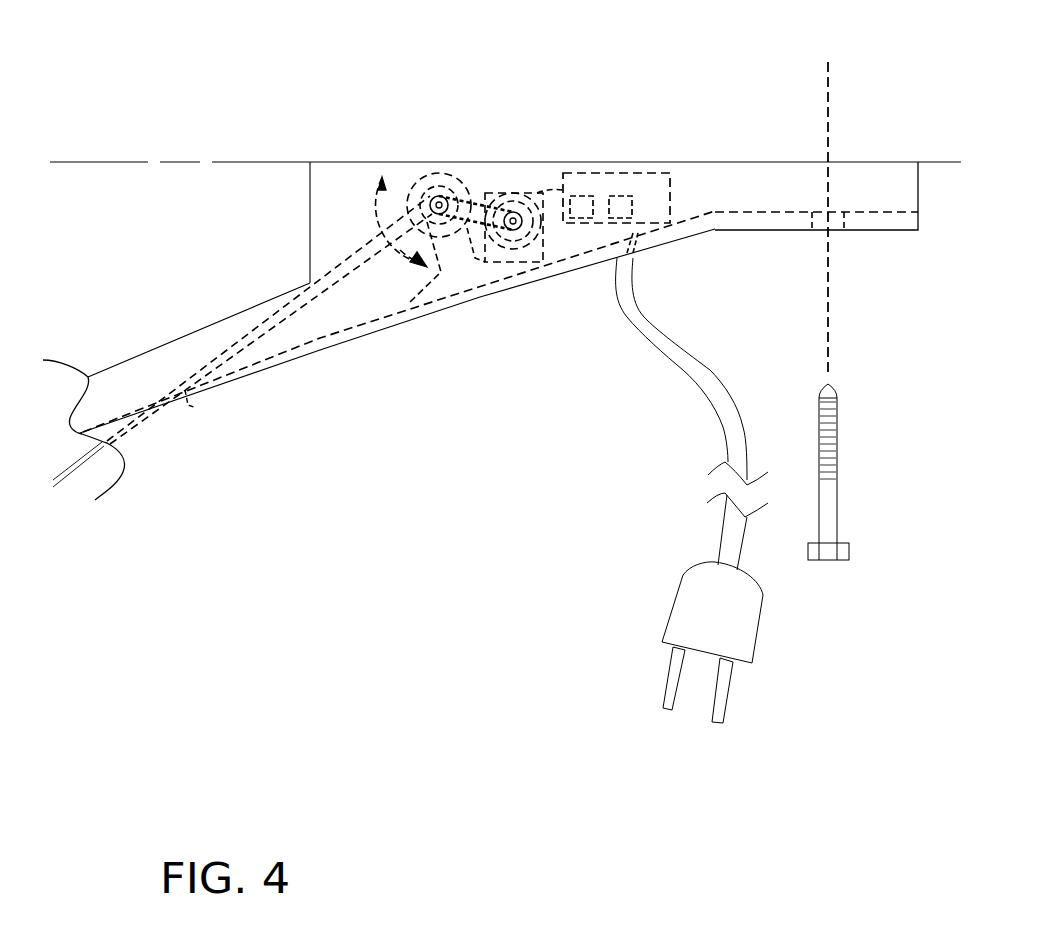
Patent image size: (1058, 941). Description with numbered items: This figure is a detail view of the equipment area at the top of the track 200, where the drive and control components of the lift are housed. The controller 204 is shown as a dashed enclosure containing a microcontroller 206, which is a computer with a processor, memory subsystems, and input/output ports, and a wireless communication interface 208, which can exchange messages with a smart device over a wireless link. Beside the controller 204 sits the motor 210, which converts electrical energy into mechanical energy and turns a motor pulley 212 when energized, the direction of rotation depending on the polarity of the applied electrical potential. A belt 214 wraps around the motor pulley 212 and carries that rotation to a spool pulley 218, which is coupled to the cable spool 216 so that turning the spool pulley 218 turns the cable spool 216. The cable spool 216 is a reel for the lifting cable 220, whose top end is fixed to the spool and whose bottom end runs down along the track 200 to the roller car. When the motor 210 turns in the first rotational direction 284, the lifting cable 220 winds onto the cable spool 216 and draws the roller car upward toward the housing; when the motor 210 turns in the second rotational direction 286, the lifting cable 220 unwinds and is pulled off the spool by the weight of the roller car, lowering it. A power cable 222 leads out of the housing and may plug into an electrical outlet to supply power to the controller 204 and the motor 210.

The track 200 is at (160, 350).
The controller 204 is at (640, 173).
The microcontroller 206 is at (619, 195).
The wireless communication interface 208 is at (578, 195).
The motor 210 is at (510, 194).
The motor pulley 212 is at (523, 230).
The belt 214 is at (462, 222).
The cable spool 216 is at (435, 173).
The spool pulley 218 is at (428, 174).
The lifting cable 220 is at (262, 324).
The power cable 222 is at (697, 367).
The first rotational direction 284 is at (405, 301).
The second rotational direction 286 is at (368, 198).